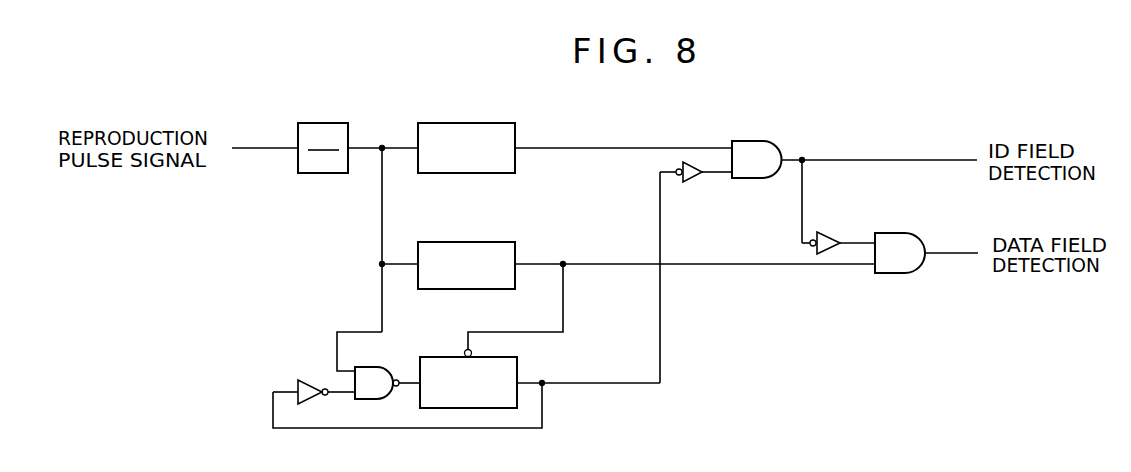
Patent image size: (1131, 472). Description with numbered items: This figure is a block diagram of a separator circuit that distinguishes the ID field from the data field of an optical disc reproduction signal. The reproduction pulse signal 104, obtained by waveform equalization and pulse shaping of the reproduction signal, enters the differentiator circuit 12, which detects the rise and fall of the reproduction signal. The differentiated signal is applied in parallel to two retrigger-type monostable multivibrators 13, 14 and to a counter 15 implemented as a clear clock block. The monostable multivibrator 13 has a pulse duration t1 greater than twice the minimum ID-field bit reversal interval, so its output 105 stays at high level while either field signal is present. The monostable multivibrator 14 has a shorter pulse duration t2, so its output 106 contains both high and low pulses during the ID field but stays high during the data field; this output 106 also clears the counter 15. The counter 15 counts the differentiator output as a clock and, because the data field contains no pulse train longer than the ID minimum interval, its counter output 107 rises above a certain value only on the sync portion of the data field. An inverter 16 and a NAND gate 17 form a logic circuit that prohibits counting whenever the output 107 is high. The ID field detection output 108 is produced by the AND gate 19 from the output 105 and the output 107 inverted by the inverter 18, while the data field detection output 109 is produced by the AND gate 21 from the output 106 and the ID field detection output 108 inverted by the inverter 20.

The differentiator circuit 12 is at (322, 122).
The monostable multivibrator 13 is at (501, 116).
The monostable multivibrator 14 is at (501, 236).
The counter 15 is at (432, 355).
The inverter 16 is at (309, 379).
The NAND gate 17 is at (388, 367).
The inverter 18 is at (697, 182).
The AND gate 19 is at (768, 141).
The inverter 20 is at (836, 232).
The AND gate 21 is at (916, 233).
The reproduction pulse signal 104 is at (257, 144).
The output of monostable multivibrator 13 105 is at (629, 147).
The output of monostable multivibrator 14 106 is at (611, 253).
The counter output 107 is at (612, 382).
The ID field detection output 108 is at (882, 158).
The data field detection output 109 is at (960, 254).